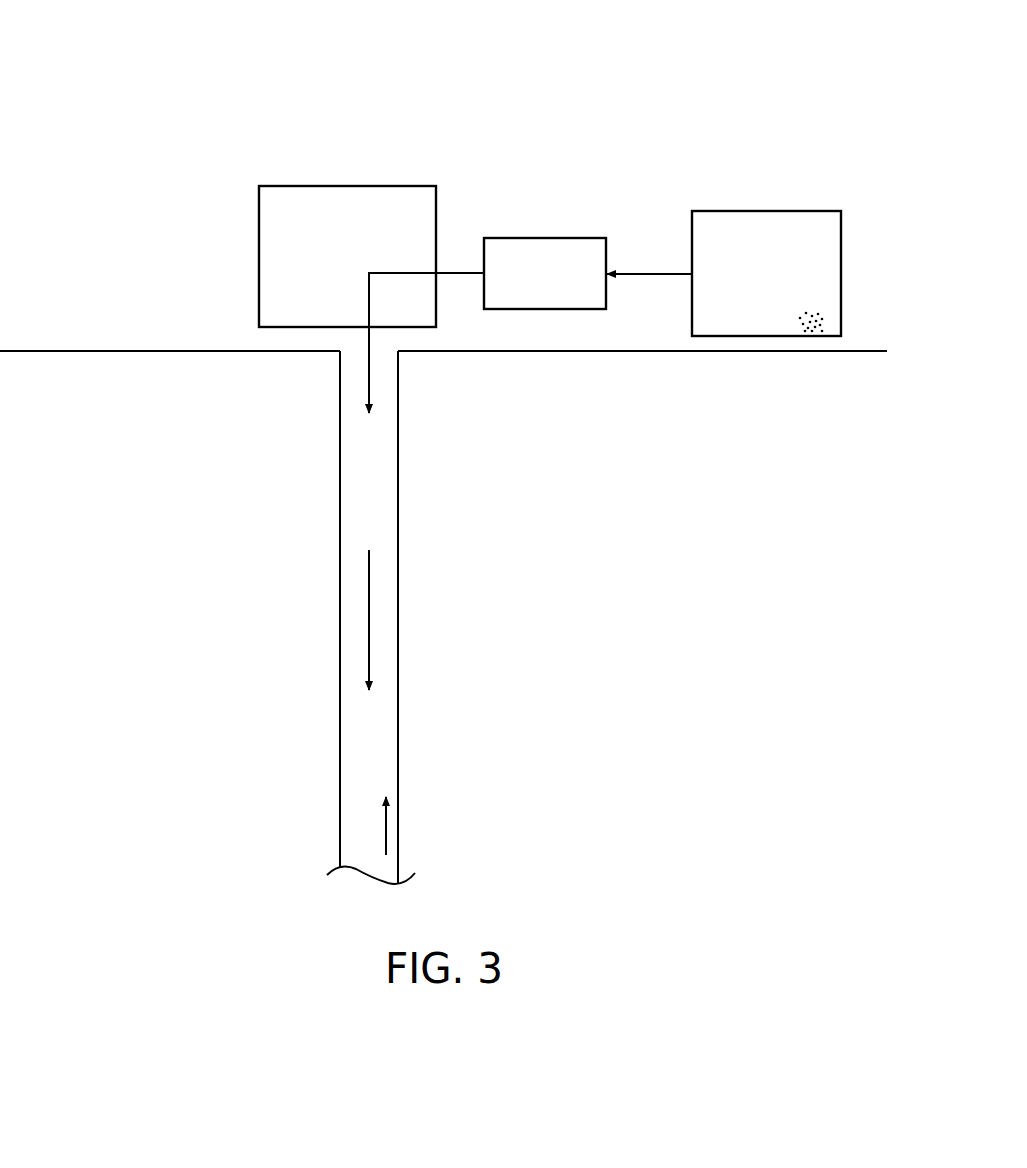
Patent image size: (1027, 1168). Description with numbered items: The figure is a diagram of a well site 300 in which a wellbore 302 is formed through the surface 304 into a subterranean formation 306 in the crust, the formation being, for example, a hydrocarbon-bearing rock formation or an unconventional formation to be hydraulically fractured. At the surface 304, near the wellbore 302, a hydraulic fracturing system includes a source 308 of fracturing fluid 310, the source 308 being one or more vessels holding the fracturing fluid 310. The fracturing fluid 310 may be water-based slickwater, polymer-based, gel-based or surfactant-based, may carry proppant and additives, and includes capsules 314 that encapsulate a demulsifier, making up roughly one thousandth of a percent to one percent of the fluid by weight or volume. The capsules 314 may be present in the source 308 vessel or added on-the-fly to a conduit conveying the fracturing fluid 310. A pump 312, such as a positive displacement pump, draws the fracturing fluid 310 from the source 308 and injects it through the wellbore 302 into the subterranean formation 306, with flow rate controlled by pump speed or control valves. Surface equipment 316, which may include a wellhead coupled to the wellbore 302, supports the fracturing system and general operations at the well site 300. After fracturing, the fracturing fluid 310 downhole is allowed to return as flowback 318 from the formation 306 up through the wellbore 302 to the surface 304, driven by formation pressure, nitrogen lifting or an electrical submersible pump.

The well site 300 is at (150, 66).
The wellbore 302 is at (339, 505).
The surface 304 is at (106, 351).
The subterranean formation 306 is at (510, 469).
The source 308 is at (767, 211).
The fracturing fluid 310 is at (681, 273).
The pump 312 is at (546, 238).
The capsules 314 is at (817, 313).
The surface equipment 316 is at (370, 186).
The flowback 318 is at (386, 832).